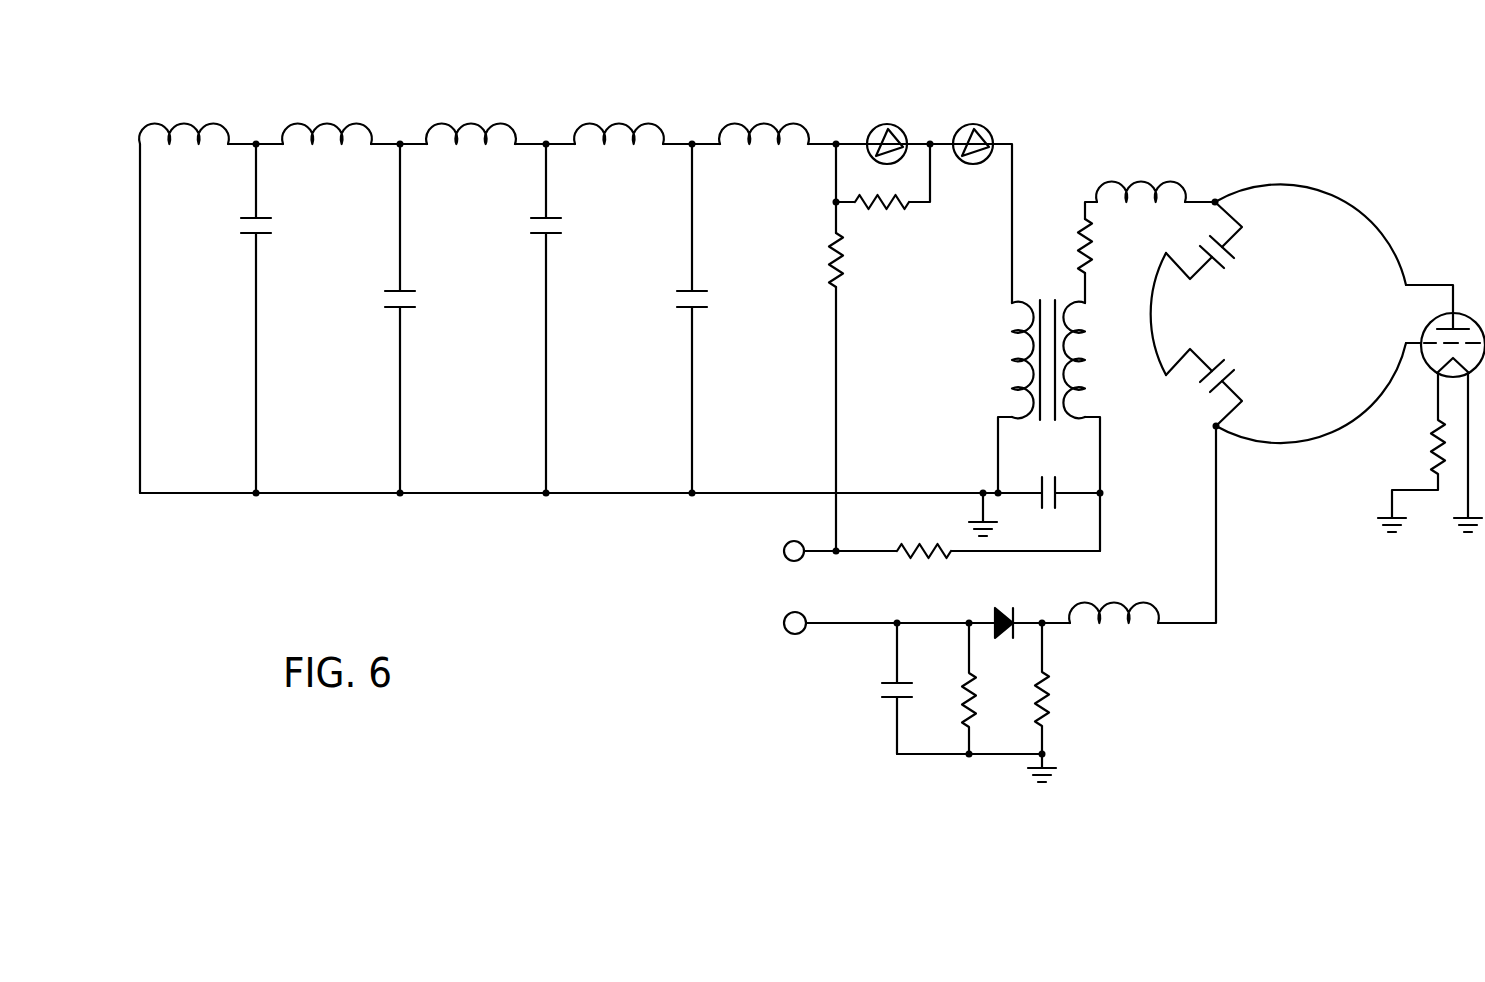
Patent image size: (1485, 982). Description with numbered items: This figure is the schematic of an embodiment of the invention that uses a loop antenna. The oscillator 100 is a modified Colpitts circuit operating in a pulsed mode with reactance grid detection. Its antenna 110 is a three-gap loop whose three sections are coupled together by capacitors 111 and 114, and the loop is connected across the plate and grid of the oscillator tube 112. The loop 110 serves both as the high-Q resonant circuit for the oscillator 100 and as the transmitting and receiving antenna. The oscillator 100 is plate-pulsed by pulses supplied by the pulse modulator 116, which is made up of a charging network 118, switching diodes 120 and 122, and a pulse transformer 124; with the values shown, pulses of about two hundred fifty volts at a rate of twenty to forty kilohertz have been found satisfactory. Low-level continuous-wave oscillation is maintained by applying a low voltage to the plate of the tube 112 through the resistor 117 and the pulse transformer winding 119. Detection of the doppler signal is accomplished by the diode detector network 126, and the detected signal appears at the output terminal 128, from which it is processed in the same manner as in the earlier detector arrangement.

The oscillator 100 is at (1420, 182).
The antenna 110 is at (1375, 227).
The capacitor 111 is at (1234, 252).
The oscillator tube 112 is at (1432, 318).
The capacitor 114 is at (1232, 378).
The pulse modulator 116 is at (648, 531).
The resistor 117 is at (927, 560).
The charging network 118 is at (500, 249).
The pulse transformer winding 119 is at (1083, 352).
The switching diode 120 is at (887, 123).
The switching diode 122 is at (972, 123).
The pulse transformer 124 is at (1073, 456).
The diode detector network 126 is at (1030, 674).
The output terminal 128 is at (785, 618).